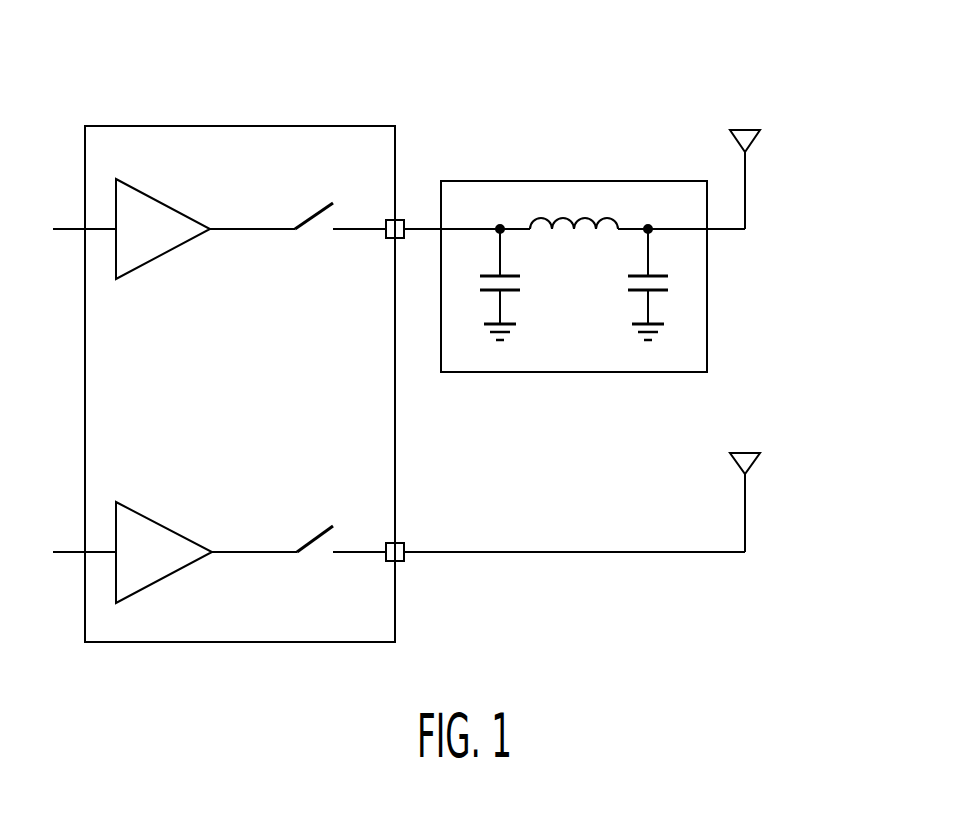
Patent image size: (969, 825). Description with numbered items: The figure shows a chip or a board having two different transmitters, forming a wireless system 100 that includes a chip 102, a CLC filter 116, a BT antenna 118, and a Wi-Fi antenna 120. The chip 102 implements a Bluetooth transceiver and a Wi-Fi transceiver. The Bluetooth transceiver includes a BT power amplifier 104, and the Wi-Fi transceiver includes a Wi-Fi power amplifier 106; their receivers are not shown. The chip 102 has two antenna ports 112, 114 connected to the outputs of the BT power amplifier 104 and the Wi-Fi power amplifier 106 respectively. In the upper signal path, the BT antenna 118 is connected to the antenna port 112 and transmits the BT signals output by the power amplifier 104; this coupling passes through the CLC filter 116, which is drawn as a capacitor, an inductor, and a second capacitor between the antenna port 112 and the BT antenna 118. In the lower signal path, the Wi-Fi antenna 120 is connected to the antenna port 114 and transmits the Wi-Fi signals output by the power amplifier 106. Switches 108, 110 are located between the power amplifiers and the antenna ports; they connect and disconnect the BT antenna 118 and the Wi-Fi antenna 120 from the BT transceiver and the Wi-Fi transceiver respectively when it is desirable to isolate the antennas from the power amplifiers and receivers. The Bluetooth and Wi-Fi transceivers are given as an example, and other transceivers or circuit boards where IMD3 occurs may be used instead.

The wireless system 100 is at (106, 80).
The chip 102 is at (255, 126).
The BT power amplifier 104 is at (154, 262).
The Wi-Fi power amplifier 106 is at (152, 585).
The switch 108 is at (333, 200).
The switch 110 is at (333, 523).
The antenna port 112 is at (406, 220).
The antenna port 114 is at (401, 543).
The CLC filter 116 is at (571, 181).
The BT antenna 118 is at (745, 130).
The Wi-Fi antenna 120 is at (745, 453).